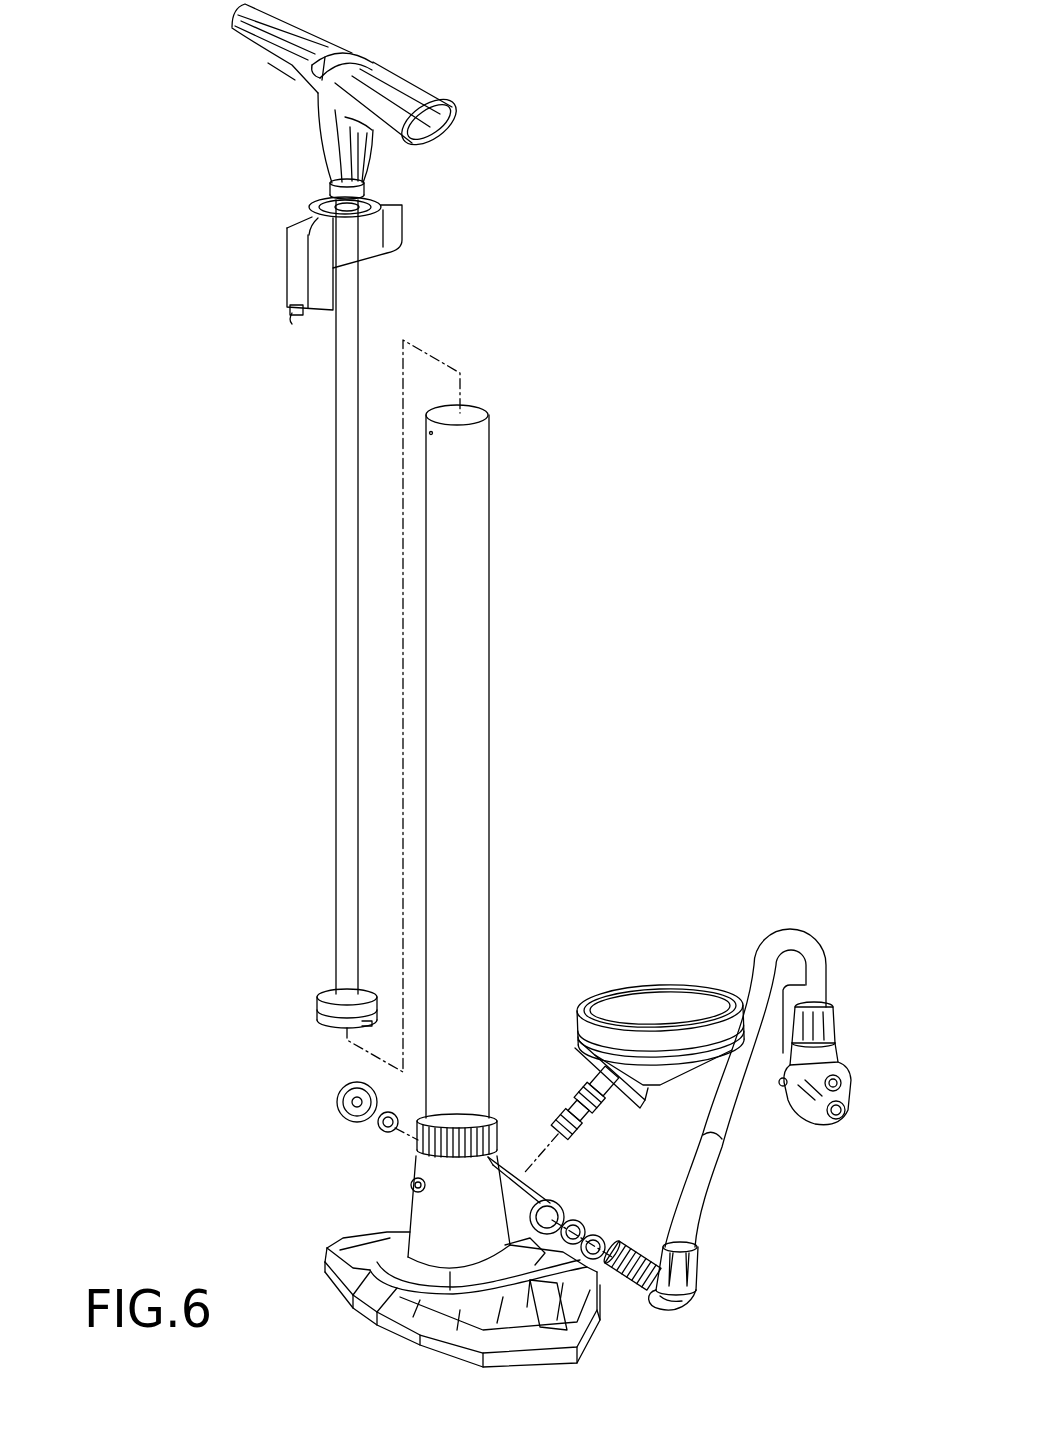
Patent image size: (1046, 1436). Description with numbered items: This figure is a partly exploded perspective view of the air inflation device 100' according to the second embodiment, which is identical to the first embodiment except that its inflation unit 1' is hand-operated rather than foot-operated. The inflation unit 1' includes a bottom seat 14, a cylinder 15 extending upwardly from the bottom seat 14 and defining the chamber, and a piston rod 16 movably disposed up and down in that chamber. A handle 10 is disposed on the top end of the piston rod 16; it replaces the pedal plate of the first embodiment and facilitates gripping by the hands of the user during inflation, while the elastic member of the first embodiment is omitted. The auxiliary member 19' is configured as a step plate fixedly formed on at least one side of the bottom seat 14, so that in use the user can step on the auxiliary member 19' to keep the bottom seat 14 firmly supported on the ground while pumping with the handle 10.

The inflation unit 1' is at (300, 323).
The handle 10 is at (403, 91).
The piston rod 16 is at (348, 568).
The air inflation device 100' is at (594, 824).
The cylinder 15 is at (452, 735).
The bottom seat 14 is at (356, 1300).
The auxiliary member 19' is at (436, 1248).